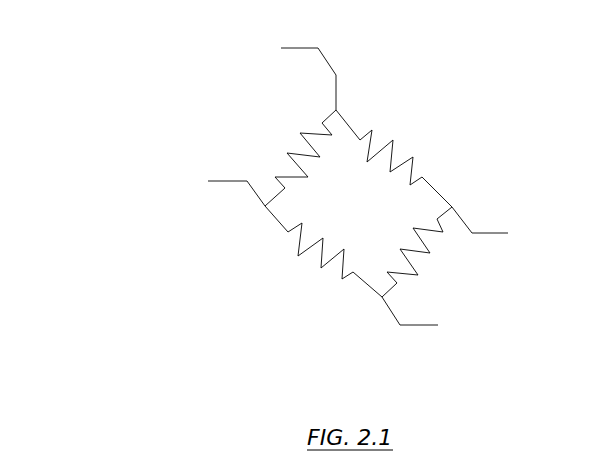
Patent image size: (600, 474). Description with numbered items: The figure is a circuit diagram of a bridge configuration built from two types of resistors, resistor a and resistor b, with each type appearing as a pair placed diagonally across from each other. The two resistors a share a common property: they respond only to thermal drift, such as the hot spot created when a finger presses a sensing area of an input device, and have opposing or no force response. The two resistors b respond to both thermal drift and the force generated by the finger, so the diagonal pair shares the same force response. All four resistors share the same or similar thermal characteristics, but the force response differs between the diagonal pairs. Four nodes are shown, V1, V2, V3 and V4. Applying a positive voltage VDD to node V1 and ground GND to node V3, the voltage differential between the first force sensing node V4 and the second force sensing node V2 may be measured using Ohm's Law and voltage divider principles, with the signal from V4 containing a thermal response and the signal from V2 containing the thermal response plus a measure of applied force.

The node V1 is at (289, 72).
The second force sensing node V2 is at (218, 187).
The node V3 is at (429, 317).
The first force sensing node V4 is at (499, 227).
The resistor a is at (358, 203).
The resistor b is at (358, 206).